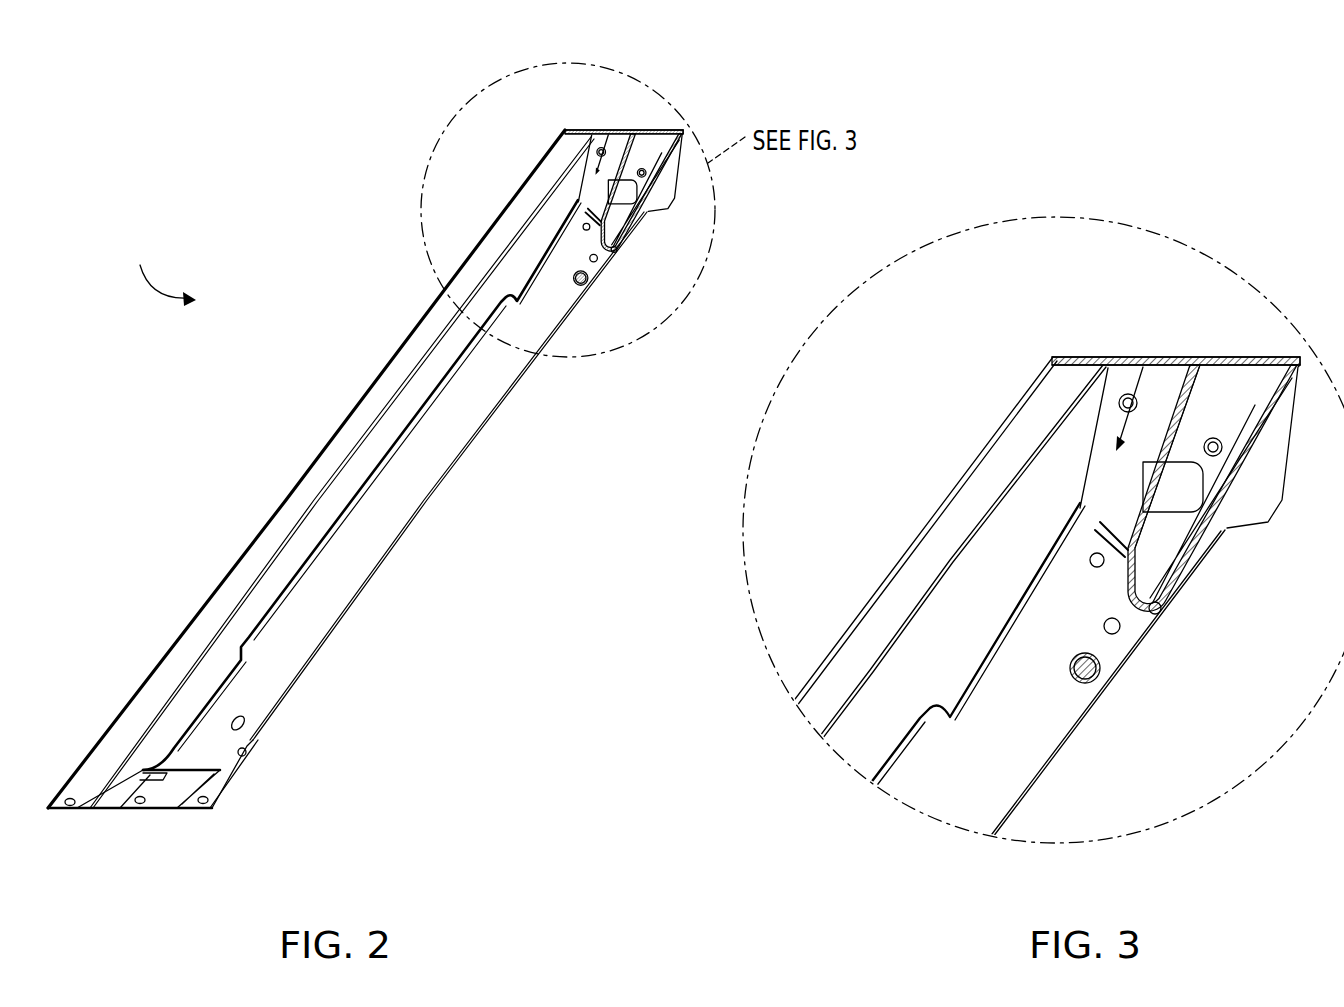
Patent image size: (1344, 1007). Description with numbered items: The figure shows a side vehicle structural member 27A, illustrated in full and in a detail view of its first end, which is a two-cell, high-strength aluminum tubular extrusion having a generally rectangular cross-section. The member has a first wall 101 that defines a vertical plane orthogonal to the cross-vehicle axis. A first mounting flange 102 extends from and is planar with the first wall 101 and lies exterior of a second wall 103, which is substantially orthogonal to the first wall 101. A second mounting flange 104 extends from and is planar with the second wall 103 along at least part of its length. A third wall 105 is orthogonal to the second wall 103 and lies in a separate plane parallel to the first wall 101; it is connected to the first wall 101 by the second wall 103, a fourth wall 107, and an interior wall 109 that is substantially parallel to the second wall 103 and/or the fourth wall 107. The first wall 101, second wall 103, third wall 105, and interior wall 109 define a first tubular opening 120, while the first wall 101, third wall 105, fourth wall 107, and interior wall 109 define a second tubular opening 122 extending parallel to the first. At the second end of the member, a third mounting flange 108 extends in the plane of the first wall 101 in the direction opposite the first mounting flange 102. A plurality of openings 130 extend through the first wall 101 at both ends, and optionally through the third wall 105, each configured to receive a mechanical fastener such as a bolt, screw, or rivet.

In FIG. 2, the side vehicle structural member 27A is at (157, 264).
In FIG. 3, the first wall 101 is at (1137, 378).
In FIG. 2, the first mounting flange 102 is at (555, 162).
In FIG. 3, the first mounting flange 102 is at (1022, 440).
In FIG. 2, the second wall 103 is at (440, 345).
In FIG. 3, the second wall 103 is at (987, 540).
In FIG. 2, the second mounting flange 104 is at (520, 272).
In FIG. 3, the second mounting flange 104 is at (977, 668).
In FIG. 2, the third wall 105 is at (342, 561).
In FIG. 3, the third wall 105 is at (1048, 740).
In FIG. 3, the fourth wall 107 is at (1203, 575).
In FIG. 2, the third mounting flange 108 is at (240, 780).
In FIG. 3, the interior wall 109 is at (1140, 492).
In FIG. 3, the first tubular opening 120 is at (1165, 405).
In FIG. 3, the second tubular opening 122 is at (1148, 553).
In FIG. 2, the openings 130 is at (668, 88).